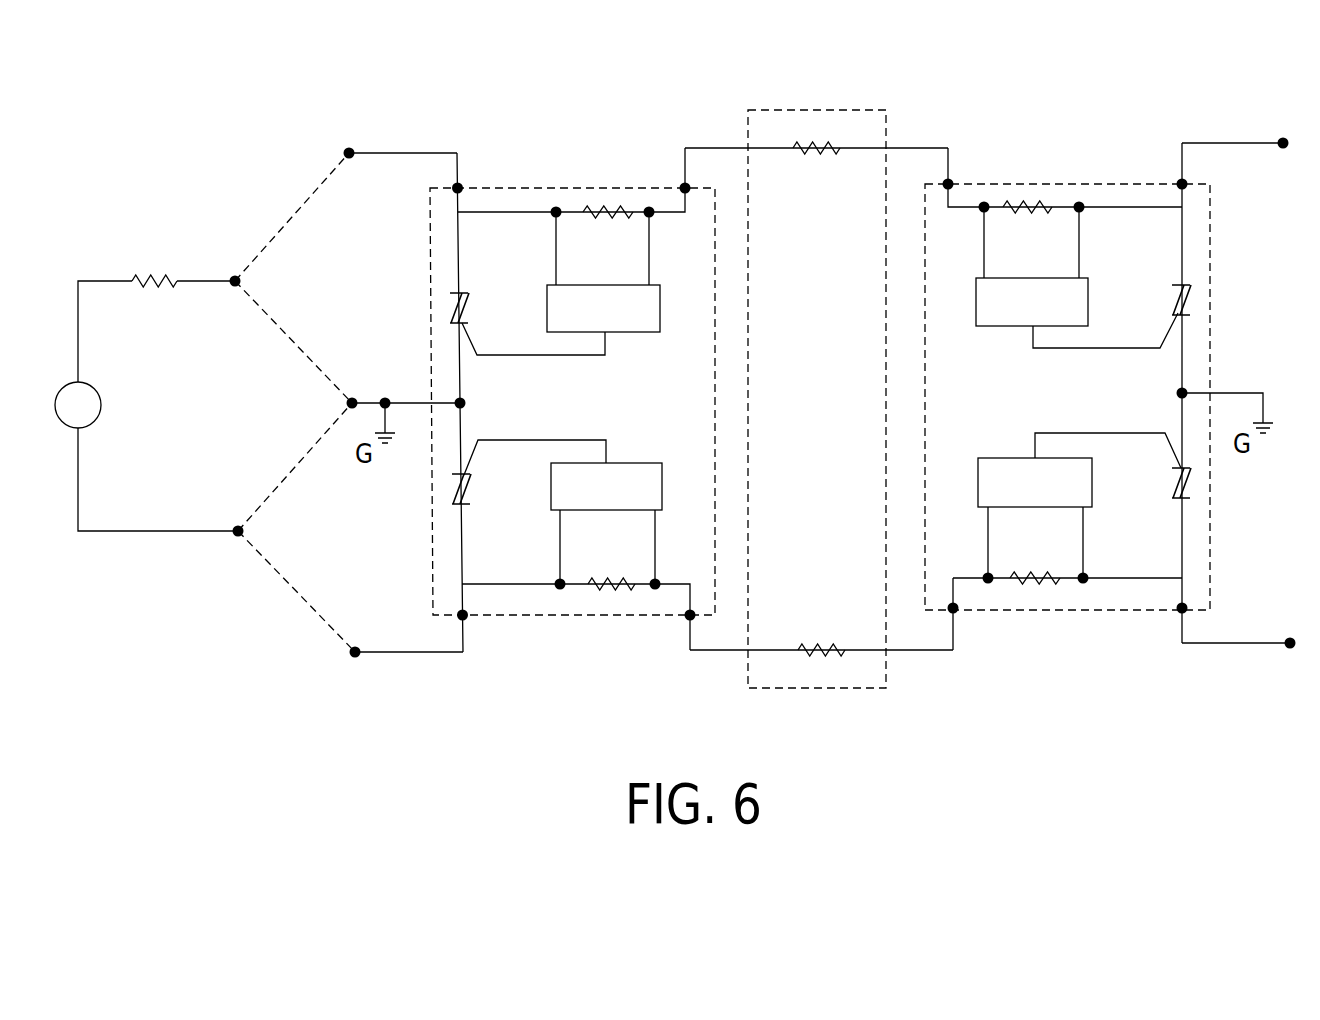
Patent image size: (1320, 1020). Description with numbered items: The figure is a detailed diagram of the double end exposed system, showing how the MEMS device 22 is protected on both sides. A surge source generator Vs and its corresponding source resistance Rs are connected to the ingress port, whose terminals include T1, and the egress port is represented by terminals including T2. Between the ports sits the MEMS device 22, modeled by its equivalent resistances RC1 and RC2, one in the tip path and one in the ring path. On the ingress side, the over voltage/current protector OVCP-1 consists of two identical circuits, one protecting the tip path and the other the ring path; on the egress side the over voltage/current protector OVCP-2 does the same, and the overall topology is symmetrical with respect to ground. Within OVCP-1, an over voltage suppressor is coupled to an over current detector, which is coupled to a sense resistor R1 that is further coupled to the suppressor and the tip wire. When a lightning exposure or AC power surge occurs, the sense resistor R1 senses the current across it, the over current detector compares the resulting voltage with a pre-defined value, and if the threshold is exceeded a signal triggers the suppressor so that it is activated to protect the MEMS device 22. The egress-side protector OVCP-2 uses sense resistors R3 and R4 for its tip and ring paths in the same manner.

The MEMS device 22 is at (819, 375).
The equivalent resistance of the MEMS device RC1 is at (817, 168).
The equivalent resistance of the MEMS device RC2 is at (824, 631).
The over voltage/current protector for the ingress port OVCP-1 is at (640, 408).
The over voltage/current protector for the egress port OVCP-2 is at (1067, 397).
The sense resistor for the ingress port R1 is at (407, 672).
The sense resistor for the egress port R3 is at (1027, 226).
The sense resistor for the egress port R4 is at (1035, 561).
The source resistance Rs is at (154, 300).
The surge source generator Vs is at (71, 391).
The tip terminal of the ingress port T1 is at (401, 139).
The tip terminal of the egress port T2 is at (1235, 129).